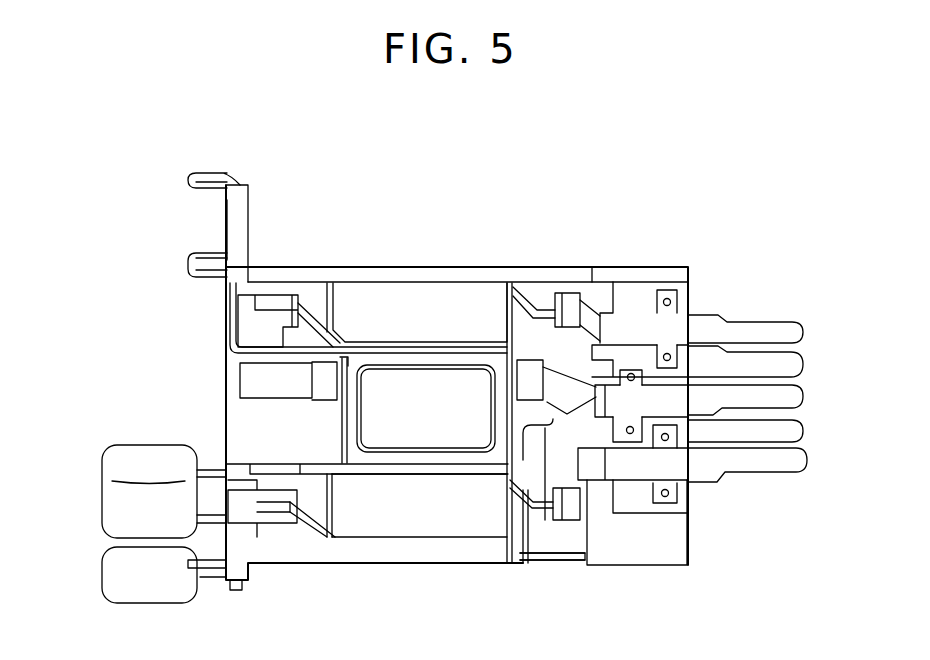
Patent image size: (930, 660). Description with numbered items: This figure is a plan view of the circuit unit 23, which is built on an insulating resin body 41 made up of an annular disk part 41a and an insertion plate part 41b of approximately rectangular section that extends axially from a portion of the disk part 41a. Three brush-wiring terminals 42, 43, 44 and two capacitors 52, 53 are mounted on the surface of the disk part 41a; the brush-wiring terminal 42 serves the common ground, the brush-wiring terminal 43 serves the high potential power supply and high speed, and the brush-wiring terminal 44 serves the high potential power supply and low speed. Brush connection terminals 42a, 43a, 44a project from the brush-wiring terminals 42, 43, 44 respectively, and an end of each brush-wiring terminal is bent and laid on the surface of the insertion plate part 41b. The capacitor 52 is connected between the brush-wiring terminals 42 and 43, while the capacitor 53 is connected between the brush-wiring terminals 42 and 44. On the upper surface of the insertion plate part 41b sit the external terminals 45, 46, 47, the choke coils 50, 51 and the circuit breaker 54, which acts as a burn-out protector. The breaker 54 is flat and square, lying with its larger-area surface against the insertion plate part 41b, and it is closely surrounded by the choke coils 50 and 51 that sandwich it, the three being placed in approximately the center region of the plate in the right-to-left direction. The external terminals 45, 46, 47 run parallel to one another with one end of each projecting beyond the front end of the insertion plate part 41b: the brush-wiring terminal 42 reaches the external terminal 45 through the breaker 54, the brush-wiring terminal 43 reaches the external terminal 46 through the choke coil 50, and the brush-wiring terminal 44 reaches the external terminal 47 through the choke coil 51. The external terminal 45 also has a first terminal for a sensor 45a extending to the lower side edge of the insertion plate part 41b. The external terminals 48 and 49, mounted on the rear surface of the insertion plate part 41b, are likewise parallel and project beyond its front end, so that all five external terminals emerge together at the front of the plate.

The circuit unit 23 is at (548, 252).
The body 41 is at (408, 182).
The disk part 41a is at (242, 206).
The insertion plate part 41b is at (371, 274).
The brush-wiring terminal 42 is at (250, 378).
The brush connection terminal 42a is at (212, 180).
The brush-wiring terminal 43 is at (245, 320).
The brush connection terminal 43a is at (192, 258).
The brush-wiring terminal 44 is at (242, 498).
The brush connection terminal 44a is at (210, 563).
The external terminal 45 is at (798, 400).
The first terminal for a sensor 45a is at (553, 547).
The external terminal 46 is at (798, 331).
The external terminal 47 is at (800, 463).
The external terminal 48 is at (798, 432).
The external terminal 49 is at (798, 367).
The choke coil 50 is at (458, 290).
The choke coil 51 is at (452, 525).
The capacitor 52 is at (110, 492).
The capacitor 53 is at (110, 573).
The circuit breaker 54 is at (417, 385).